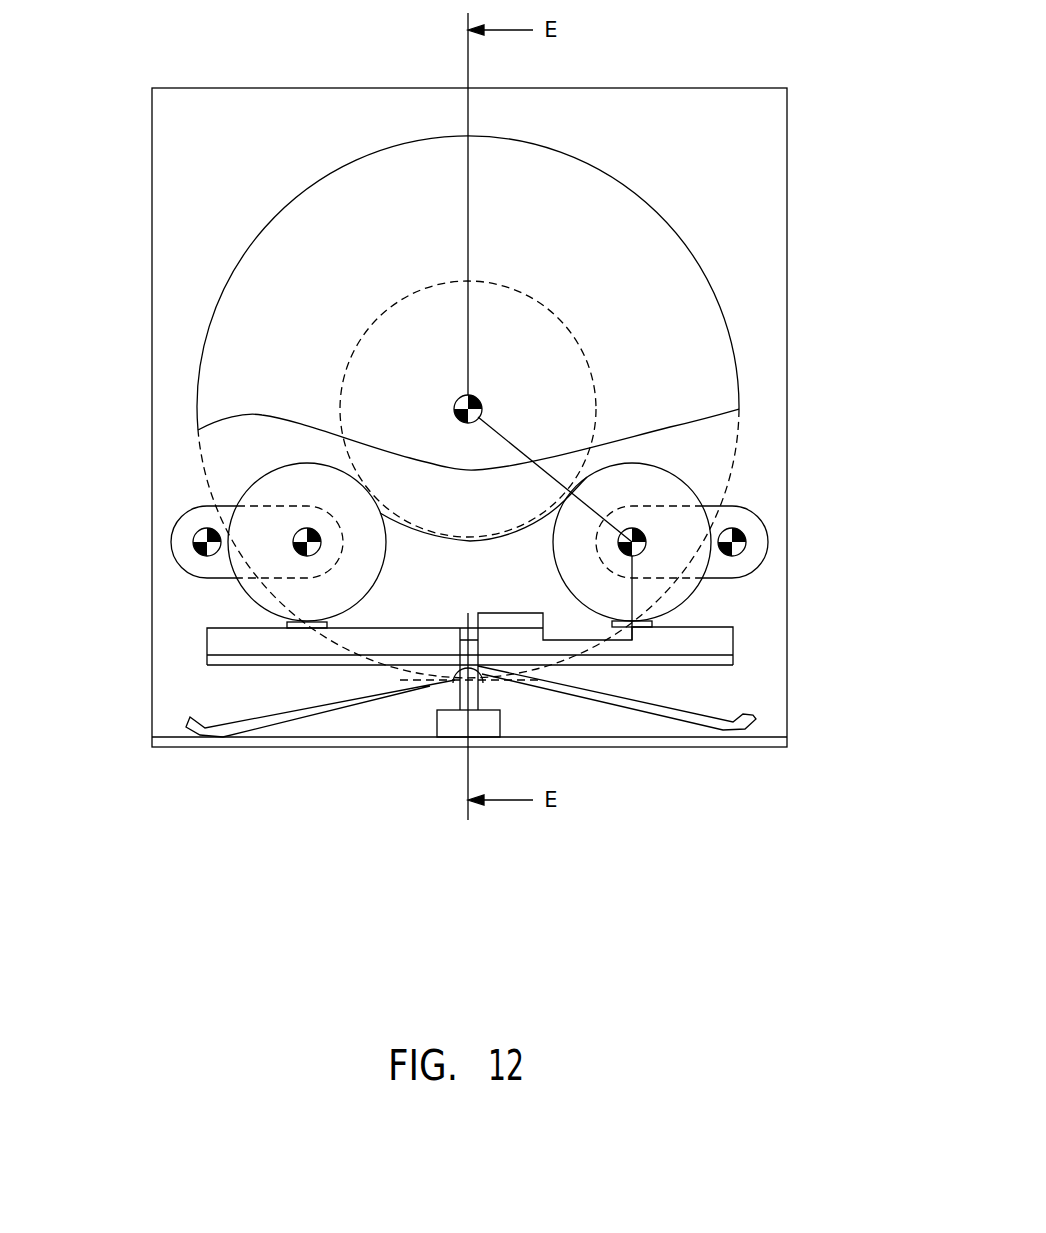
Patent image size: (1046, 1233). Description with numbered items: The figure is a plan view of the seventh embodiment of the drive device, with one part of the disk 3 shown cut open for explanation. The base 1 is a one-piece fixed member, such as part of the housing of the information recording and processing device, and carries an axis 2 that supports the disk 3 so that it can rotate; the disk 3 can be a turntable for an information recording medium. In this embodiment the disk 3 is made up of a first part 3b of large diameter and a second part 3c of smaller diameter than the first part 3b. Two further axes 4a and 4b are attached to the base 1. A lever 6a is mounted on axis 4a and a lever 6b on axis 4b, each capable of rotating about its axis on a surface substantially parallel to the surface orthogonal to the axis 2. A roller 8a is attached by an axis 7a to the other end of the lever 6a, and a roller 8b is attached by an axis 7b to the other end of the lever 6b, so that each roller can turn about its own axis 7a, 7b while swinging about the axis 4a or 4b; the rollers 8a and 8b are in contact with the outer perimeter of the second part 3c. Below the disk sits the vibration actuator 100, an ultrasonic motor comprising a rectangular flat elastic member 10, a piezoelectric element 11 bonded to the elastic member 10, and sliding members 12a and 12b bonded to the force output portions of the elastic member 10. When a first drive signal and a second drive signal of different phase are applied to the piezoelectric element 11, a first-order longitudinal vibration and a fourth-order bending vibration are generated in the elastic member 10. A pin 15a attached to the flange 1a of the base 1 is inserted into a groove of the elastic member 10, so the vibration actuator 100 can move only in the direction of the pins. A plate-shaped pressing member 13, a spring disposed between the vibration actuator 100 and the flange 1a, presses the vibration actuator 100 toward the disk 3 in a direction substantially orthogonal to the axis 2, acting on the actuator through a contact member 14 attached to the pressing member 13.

The base 1 is at (730, 124).
The flange 1a is at (763, 737).
The axis 2 is at (476, 401).
The disk 3 is at (523, 354).
The first part 3b is at (577, 157).
The second part 3c is at (553, 300).
The axis 4a is at (745, 545).
The axis 4b is at (196, 547).
The lever 6a is at (755, 522).
The lever 6b is at (174, 542).
The axis 7a is at (645, 531).
The axis 7b is at (296, 538).
The roller 8a is at (667, 483).
The roller 8b is at (275, 491).
The elastic member 10 is at (693, 640).
The piezoelectric element 11 is at (682, 660).
The sliding member 12a is at (652, 623).
The sliding member 12b is at (300, 628).
The pressing member 13 is at (380, 690).
The contact member 14 is at (482, 680).
The pin 15a is at (450, 725).
The vibration actuator 100 is at (486, 666).